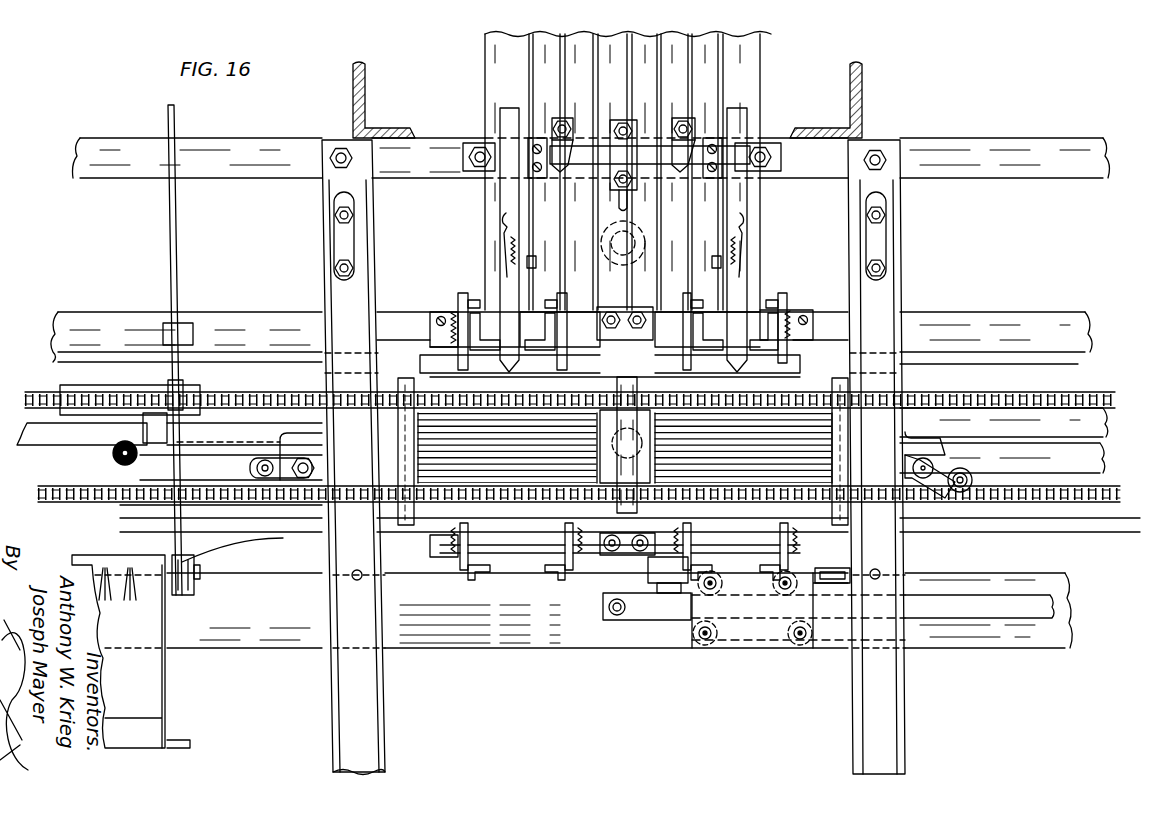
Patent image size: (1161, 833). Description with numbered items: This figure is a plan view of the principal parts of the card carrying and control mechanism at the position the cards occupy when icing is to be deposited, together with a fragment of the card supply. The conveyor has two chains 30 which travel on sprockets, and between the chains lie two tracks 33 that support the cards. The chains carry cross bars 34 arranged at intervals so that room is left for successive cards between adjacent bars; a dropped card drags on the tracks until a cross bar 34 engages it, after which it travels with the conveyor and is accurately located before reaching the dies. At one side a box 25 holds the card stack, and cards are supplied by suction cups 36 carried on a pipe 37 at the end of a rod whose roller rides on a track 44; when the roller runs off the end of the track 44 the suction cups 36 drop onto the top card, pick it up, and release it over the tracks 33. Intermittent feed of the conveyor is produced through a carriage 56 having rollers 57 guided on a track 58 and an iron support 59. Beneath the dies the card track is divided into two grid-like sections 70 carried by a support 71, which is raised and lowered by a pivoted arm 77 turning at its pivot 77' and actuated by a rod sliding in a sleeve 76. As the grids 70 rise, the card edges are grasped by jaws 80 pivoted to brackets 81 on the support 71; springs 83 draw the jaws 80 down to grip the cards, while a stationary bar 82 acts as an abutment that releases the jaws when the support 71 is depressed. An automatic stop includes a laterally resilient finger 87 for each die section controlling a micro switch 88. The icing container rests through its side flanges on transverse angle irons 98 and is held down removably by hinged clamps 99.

The box 25 is at (178, 688).
The chain 30 is at (38, 392).
The track 33 is at (232, 440).
The cross bar 34 is at (406, 527).
The suction cup 36 is at (114, 456).
The pipe 37 is at (67, 445).
The track 44 is at (177, 272).
The carriage 56 is at (750, 643).
The roller 57 is at (700, 650).
The track 58 is at (935, 603).
The iron support 59 is at (836, 648).
The grid-like section 70 is at (820, 438).
The support 71 is at (430, 383).
The sleeve 76 is at (628, 171).
The arm 77 is at (625, 316).
The pivot 77' is at (633, 115).
The jaw 80 is at (790, 315).
The bracket 81 is at (474, 582).
The bar 82 is at (588, 345).
The spring 83 is at (455, 320).
The laterally resilient finger 87 is at (500, 340).
The micro switch 88 is at (505, 258).
The transverse angle iron 98 is at (386, 730).
The clamp 99 is at (282, 487).